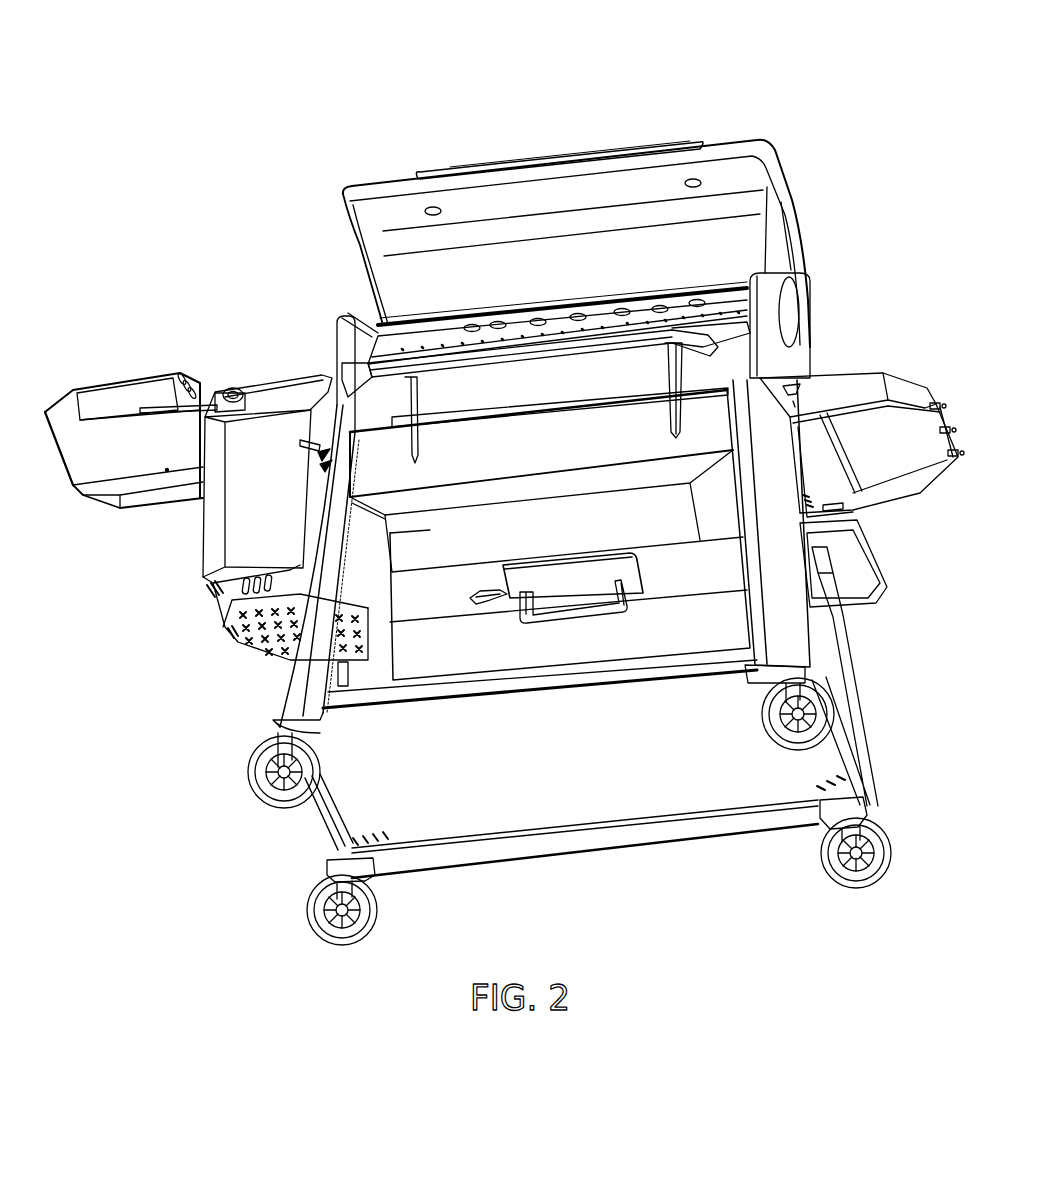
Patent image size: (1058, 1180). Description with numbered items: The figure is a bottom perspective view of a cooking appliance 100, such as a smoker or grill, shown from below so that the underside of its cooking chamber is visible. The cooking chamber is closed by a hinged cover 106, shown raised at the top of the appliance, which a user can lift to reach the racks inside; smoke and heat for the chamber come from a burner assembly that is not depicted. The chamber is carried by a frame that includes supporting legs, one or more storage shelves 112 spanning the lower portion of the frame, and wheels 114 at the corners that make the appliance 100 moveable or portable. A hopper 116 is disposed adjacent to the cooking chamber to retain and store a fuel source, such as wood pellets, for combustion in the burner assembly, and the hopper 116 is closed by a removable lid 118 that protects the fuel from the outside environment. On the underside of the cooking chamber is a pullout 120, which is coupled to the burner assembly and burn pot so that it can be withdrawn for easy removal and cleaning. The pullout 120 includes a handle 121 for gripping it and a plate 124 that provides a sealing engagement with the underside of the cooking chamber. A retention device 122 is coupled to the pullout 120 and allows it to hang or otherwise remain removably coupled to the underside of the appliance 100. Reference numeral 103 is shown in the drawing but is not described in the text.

The cooking appliance 100 is at (584, 87).
The housing 103 is at (460, 604).
The hinged cover 106 is at (771, 160).
The storage shelves 112 is at (628, 812).
The wheels 114 is at (846, 688).
The hopper 116 is at (218, 572).
The removable lid 118 is at (137, 393).
The pullout 120 is at (566, 549).
The handle 121 is at (630, 604).
The retention device 122 is at (470, 596).
The plate 124 is at (647, 598).